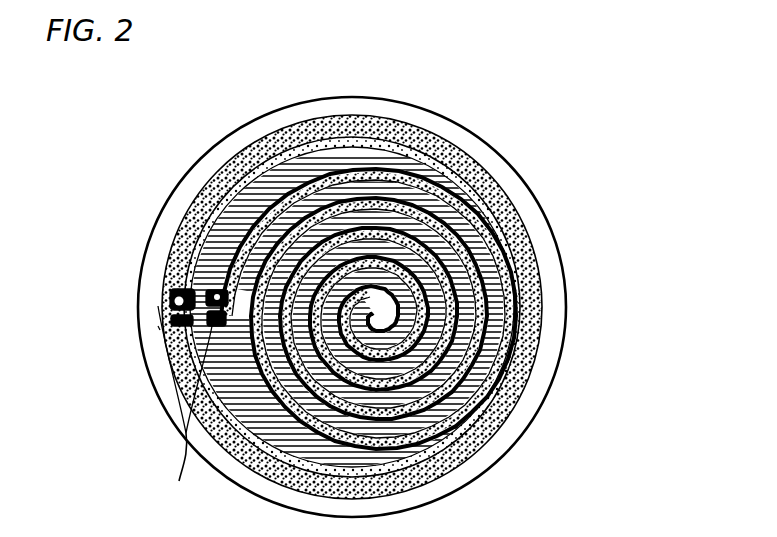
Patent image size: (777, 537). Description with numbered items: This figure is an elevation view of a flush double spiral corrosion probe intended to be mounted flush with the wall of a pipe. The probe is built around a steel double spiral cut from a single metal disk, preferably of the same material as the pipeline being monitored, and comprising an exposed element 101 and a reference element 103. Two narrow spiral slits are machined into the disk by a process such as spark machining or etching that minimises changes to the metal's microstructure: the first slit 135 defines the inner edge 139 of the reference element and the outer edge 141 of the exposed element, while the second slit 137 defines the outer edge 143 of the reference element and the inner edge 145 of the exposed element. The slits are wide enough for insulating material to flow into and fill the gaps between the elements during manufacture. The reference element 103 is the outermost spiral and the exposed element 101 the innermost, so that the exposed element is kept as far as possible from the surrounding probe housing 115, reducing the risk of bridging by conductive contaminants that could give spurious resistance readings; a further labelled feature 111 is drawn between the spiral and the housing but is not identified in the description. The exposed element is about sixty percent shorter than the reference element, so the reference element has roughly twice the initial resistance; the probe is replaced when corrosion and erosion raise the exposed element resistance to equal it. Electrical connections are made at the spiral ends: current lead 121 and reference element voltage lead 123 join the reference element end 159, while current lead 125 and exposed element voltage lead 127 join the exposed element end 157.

The exposed element 101 is at (432, 173).
The reference element 103 is at (248, 170).
The separator layer 111 is at (408, 108).
The probe housing 115 is at (511, 186).
The current lead 121 is at (164, 360).
The reference element voltage lead 123 is at (163, 279).
The current lead 125 is at (153, 392).
The exposed element voltage lead 127 is at (172, 474).
The first spiral slit 135 is at (213, 200).
The second spiral slit 137 is at (173, 250).
The inner edge of the reference element 139 is at (522, 292).
The outer edge of the exposed element 141 is at (483, 370).
The outer edge of the reference element 143 is at (293, 132).
The inner edge of the exposed element 145 is at (485, 442).
The exposed element end 157 is at (160, 367).
The reference element end 159 is at (165, 305).